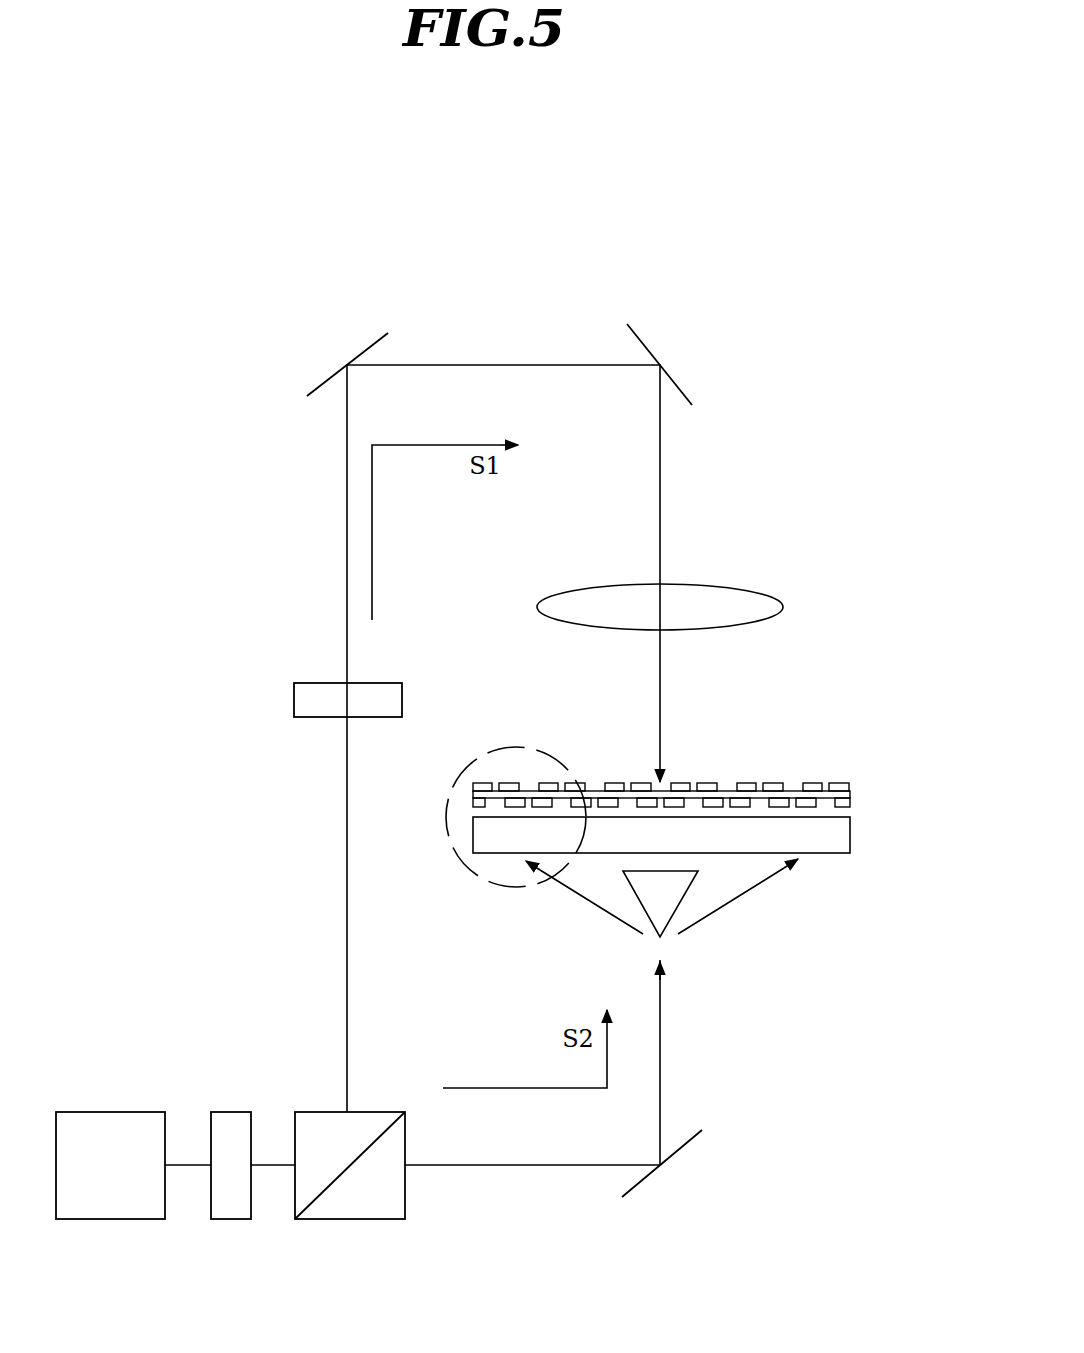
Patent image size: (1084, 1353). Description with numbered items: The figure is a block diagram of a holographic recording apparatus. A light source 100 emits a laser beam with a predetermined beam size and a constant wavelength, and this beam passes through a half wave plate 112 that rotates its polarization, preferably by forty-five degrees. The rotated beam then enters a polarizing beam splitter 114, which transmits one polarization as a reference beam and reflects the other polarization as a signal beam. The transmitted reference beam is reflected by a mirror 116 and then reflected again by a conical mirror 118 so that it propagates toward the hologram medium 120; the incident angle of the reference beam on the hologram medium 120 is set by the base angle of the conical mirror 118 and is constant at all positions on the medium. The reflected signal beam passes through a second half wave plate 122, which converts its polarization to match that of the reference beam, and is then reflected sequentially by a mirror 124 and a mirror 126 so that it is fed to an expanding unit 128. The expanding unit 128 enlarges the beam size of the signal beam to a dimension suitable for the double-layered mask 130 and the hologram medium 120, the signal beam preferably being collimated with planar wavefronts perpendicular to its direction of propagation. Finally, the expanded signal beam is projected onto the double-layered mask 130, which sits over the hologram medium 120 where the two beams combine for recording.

The light source 100 is at (110, 1219).
The half wave plate 112 is at (230, 1219).
The polarizing beam splitter 114 is at (348, 1219).
The mirror 116 is at (642, 1178).
The conical mirror 118 is at (668, 935).
The hologram medium 120 is at (815, 853).
The half wave plate 122 is at (294, 698).
The mirror 124 is at (327, 385).
The mirror 126 is at (677, 382).
The expanding unit 128 is at (730, 592).
The double-layered mask 130 is at (852, 793).